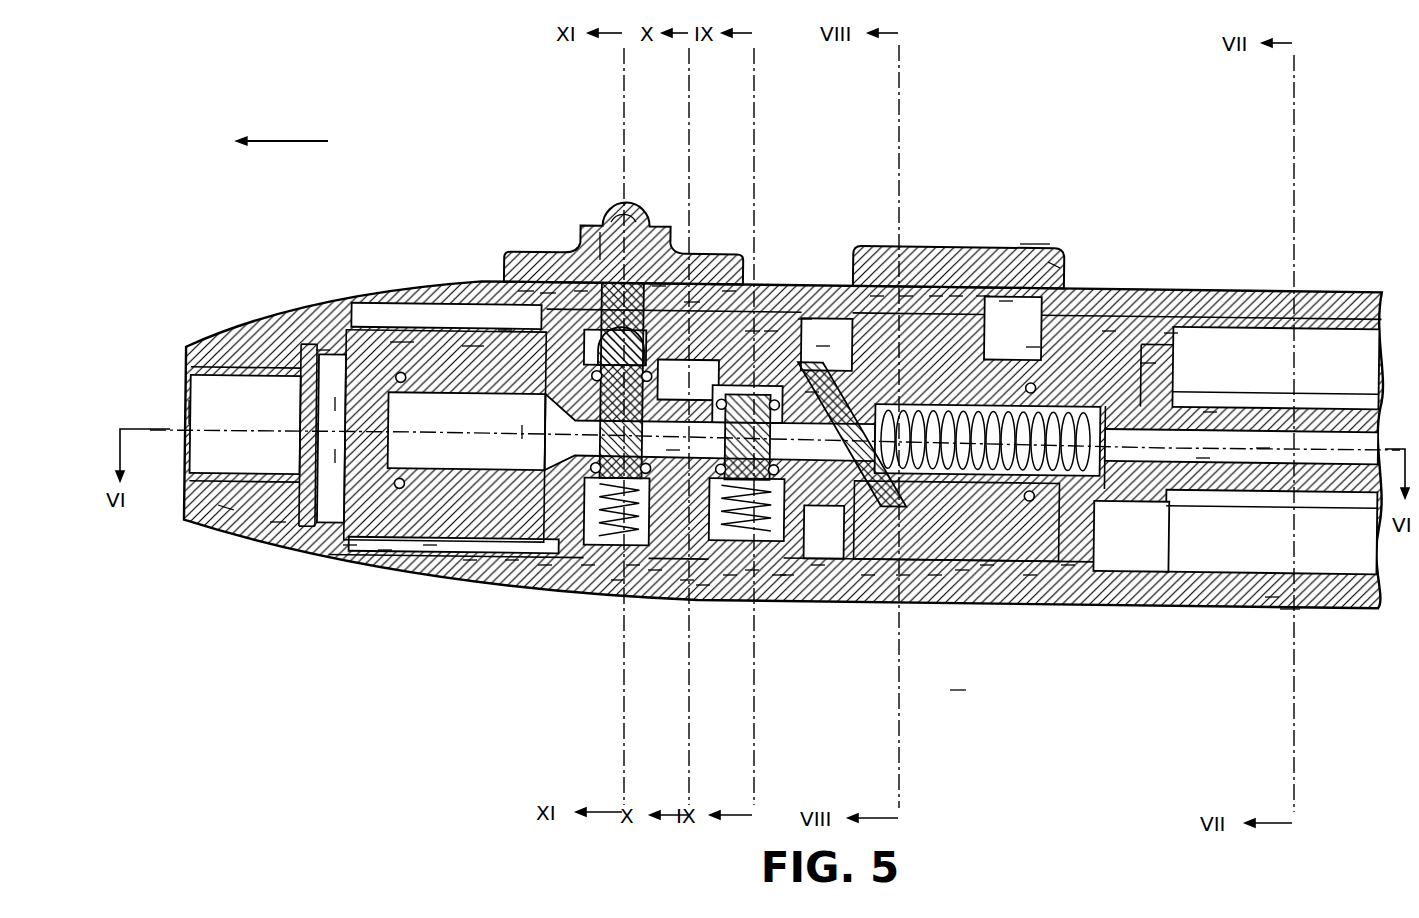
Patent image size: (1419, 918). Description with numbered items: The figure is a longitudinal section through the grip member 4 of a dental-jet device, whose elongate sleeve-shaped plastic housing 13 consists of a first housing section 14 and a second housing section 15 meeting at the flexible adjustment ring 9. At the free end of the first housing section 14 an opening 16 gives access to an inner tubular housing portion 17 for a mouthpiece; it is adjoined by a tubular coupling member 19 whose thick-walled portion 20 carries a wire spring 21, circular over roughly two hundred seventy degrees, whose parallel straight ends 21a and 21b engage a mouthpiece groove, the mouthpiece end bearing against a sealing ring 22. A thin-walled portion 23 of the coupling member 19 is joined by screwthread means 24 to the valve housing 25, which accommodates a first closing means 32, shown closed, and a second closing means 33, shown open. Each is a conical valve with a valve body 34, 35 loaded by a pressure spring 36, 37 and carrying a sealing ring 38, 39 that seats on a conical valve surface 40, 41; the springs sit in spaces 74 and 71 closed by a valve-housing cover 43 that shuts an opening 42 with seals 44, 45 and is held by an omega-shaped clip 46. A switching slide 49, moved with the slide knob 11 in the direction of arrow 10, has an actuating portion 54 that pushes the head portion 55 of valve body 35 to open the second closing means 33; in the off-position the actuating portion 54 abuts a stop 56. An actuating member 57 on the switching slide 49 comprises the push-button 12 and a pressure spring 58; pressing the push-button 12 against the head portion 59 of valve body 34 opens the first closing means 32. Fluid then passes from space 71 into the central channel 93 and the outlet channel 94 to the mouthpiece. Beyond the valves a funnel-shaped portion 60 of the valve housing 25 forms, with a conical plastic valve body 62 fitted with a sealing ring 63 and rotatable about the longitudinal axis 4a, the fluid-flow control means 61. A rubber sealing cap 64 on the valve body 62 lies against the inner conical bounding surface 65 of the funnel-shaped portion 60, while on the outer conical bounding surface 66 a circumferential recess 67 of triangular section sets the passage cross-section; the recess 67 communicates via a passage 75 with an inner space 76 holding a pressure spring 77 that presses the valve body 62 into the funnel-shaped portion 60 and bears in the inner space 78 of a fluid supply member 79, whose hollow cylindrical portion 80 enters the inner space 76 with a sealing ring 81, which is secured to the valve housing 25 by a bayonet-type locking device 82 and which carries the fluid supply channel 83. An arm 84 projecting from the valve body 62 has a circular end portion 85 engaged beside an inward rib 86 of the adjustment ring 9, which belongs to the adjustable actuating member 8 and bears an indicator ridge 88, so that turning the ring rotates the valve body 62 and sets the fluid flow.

The grip member 4 is at (961, 693).
The longitudinal axis 4a is at (1263, 448).
The actuating member 8 is at (1037, 239).
The adjustment ring 9 is at (987, 565).
The arrow 10 is at (280, 141).
The slide knob 11 is at (503, 330).
The push-button 12 is at (603, 232).
The plastic housing 13 is at (1292, 614).
The first housing section 14 is at (225, 508).
The second housing section 15 is at (1272, 597).
The opening 16 is at (192, 412).
The tubular housing portion 17 is at (276, 525).
The coupling member 19 is at (525, 290).
The thick-walled portion 20 is at (402, 342).
The wire spring 21 is at (323, 350).
The spring end 21a is at (335, 404).
The spring end 21b is at (335, 456).
The sealing ring 22 is at (350, 545).
The thin-walled portion 23 is at (472, 346).
The screwthread means 24 is at (385, 550).
The valve housing 25 is at (805, 318).
The first closing means 32 is at (545, 565).
The second closing means 33 is at (779, 575).
The valve body 34 is at (548, 292).
The valve body 35 is at (730, 575).
The pressure spring 36 is at (588, 565).
The pressure spring 37 is at (752, 570).
The sealing ring 38 is at (673, 450).
The sealing ring 39 is at (787, 575).
The conical valve surface 40 is at (522, 432).
The conical valve surface 41 is at (770, 330).
The opening 42 is at (470, 560).
The valve-housing cover 43 is at (703, 585).
The seal 44 is at (512, 560).
The seal 45 is at (818, 565).
The clip 46 is at (633, 565).
The switching slide 49 is at (692, 296).
The actuating portion 54 is at (728, 290).
The head portion 55 is at (752, 330).
The stop 56 is at (823, 345).
The actuating member 57 is at (633, 197).
The pressure spring 58 is at (658, 285).
The head portion 59 is at (580, 290).
The funnel-shaped portion 60 is at (903, 575).
The fluid-flow control means 61 is at (812, 392).
The valve body 62 is at (955, 295).
The sealing ring 63 is at (935, 575).
The sealing cap 64 is at (868, 575).
The inner conical bounding surface 65 is at (905, 295).
The outer conical bounding surface 66 is at (935, 295).
The circumferential recess 67 is at (876, 295).
The space 71 is at (687, 580).
The further space 74 is at (618, 580).
The passage 75 is at (858, 285).
The inner space 76 is at (962, 570).
The pressure spring 77 is at (1108, 330).
The inner space 78 is at (1149, 358).
The fluid supply member 79 is at (1210, 412).
The hollow cylindrical portion 80 is at (1068, 565).
The sealing ring 81 is at (1030, 575).
The bayonet-type locking device 82 is at (1170, 332).
The fluid supply channel 83 is at (1203, 458).
The arm 84 is at (1033, 347).
The end portion 85 is at (1005, 300).
The rib 86 is at (982, 295).
The indicator ridge 88 is at (1055, 262).
The central channel 93 is at (655, 570).
The outlet channel 94 is at (430, 545).